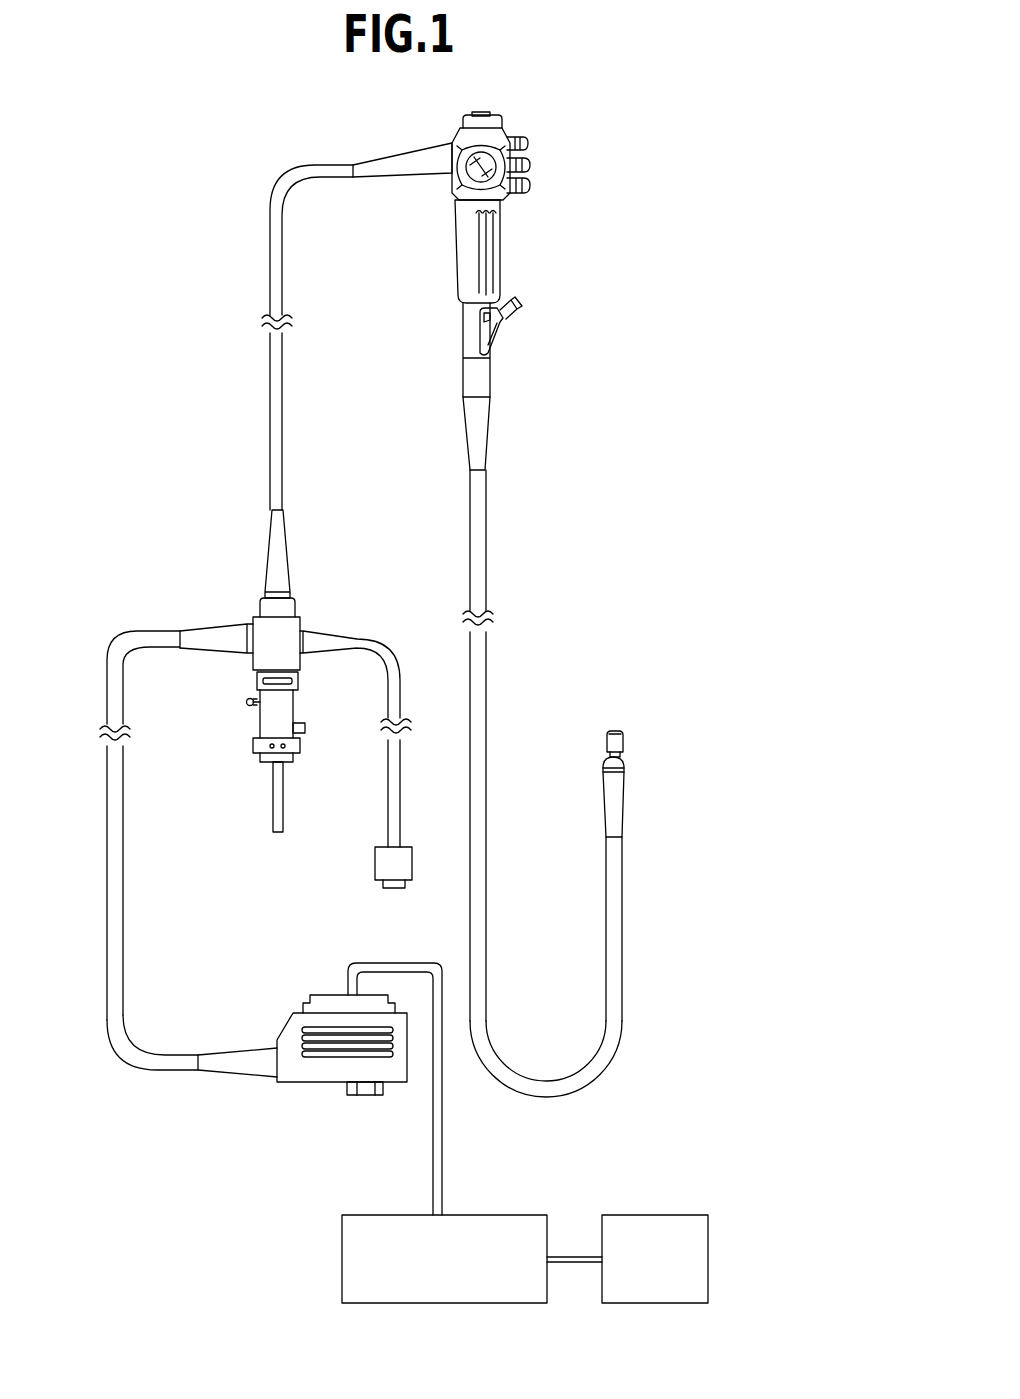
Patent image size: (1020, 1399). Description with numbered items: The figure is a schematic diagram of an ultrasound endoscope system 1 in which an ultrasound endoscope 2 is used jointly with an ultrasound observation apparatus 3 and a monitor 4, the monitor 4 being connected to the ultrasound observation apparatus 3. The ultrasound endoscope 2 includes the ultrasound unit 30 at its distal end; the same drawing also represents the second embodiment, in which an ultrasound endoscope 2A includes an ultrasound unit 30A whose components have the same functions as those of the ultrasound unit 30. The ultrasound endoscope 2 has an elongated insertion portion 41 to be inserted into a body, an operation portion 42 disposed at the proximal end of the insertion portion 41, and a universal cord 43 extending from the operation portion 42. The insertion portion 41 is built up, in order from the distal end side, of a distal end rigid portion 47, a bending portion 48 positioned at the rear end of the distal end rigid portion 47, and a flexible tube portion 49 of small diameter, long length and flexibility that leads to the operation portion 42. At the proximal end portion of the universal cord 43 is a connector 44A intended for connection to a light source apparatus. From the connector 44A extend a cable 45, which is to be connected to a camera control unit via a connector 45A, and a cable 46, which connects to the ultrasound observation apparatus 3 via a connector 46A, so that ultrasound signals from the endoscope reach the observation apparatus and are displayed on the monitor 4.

The ultrasound endoscope system 1 is at (155, 146).
The ultrasound endoscope 2 is at (487, 513).
The ultrasound endoscope 2A is at (576, 604).
The ultrasound observation apparatus 3 is at (496, 1212).
The monitor 4 is at (655, 1212).
The ultrasound unit 30 is at (625, 742).
The ultrasound unit 30A is at (576, 738).
The insertion portion 41 is at (461, 900).
The operation portion 42 is at (452, 222).
The universal cord 43 is at (293, 188).
The connector 44A is at (240, 765).
The cable 45 is at (402, 683).
The connector 45A is at (366, 884).
The cable 46 is at (123, 887).
The connector 46A is at (288, 1004).
The distal end rigid portion 47 is at (589, 748).
The bending portion 48 is at (602, 802).
The flexible tube portion 49 is at (547, 1078).